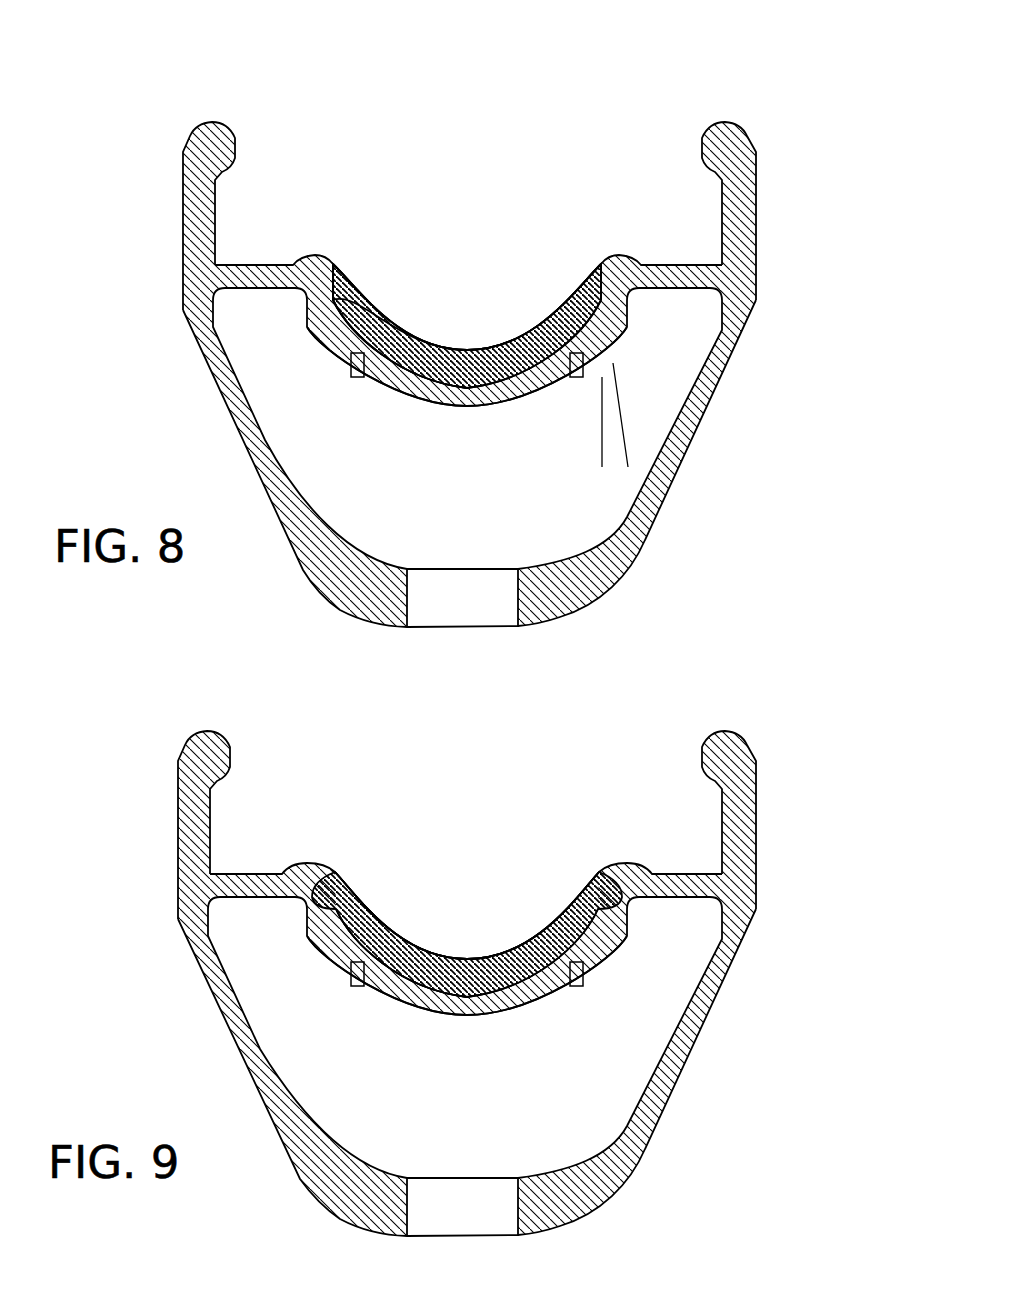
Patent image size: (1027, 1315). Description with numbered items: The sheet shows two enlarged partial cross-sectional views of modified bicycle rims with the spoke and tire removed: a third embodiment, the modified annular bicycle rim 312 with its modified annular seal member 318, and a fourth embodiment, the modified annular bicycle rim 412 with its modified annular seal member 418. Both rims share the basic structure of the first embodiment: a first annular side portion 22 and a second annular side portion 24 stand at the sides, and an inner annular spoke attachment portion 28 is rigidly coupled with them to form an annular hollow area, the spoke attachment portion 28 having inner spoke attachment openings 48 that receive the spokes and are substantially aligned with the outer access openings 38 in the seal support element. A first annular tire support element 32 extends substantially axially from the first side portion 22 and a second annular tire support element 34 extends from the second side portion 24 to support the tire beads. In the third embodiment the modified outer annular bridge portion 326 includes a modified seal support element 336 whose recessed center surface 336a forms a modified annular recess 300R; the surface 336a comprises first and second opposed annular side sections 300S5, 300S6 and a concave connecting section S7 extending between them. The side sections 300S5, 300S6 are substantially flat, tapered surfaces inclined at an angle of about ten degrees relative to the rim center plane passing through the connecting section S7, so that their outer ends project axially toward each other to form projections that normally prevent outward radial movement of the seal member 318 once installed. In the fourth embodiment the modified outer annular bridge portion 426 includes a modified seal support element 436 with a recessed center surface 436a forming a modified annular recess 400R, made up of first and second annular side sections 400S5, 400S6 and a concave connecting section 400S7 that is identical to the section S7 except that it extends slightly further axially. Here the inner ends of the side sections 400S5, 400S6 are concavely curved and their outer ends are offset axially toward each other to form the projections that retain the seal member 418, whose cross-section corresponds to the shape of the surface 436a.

In FIG. 8, the first annular side portion 22 is at (734, 119).
In FIG. 9, the first annular side portion 22 is at (743, 763).
In FIG. 8, the second annular side portion 24 is at (219, 118).
In FIG. 9, the second annular side portion 24 is at (220, 779).
In FIG. 8, the inner annular spoke attachment portion 28 is at (648, 551).
In FIG. 9, the inner annular spoke attachment portion 28 is at (477, 1072).
In FIG. 8, the first annular tire support element 32 is at (684, 280).
In FIG. 9, the first annular tire support element 32 is at (660, 919).
In FIG. 8, the second annular tire support element 34 is at (272, 278).
In FIG. 9, the second annular tire support element 34 is at (272, 914).
In FIG. 8, the outer access opening 38 is at (500, 393).
In FIG. 9, the outer access opening 38 is at (467, 1018).
In FIG. 8, the inner spoke attachment opening 48 is at (517, 600).
In FIG. 9, the inner spoke attachment opening 48 is at (462, 1239).
In FIG. 8, the modified annular bicycle rim 312 is at (590, 148).
In FIG. 8, the modified annular seal member 318 is at (537, 293).
In FIG. 8, the modified outer annular bridge portion 326 is at (324, 365).
In FIG. 8, the modified seal support element 336 is at (357, 378).
In FIG. 8, the recessed center surface 336a is at (396, 362).
In FIG. 8, the modified annular recess 300R is at (494, 311).
In FIG. 8, the first annular side section 300S5 is at (588, 265).
In FIG. 8, the second annular side section 300S6 is at (345, 300).
In FIG. 8, the concave connecting section S7 is at (440, 387).
In FIG. 9, the modified annular bicycle rim 412 is at (467, 949).
In FIG. 9, the modified annular seal member 418 is at (467, 863).
In FIG. 9, the modified outer annular bridge portion 426 is at (422, 968).
In FIG. 9, the modified seal support element 436 is at (467, 970).
In FIG. 9, the recessed center surface 436a is at (401, 930).
In FIG. 9, the modified annular recess 400R is at (467, 891).
In FIG. 9, the first annular side section 400S5 is at (576, 873).
In FIG. 9, the second annular side section 400S6 is at (399, 876).
In FIG. 9, the concave connecting section 400S7 is at (467, 1025).